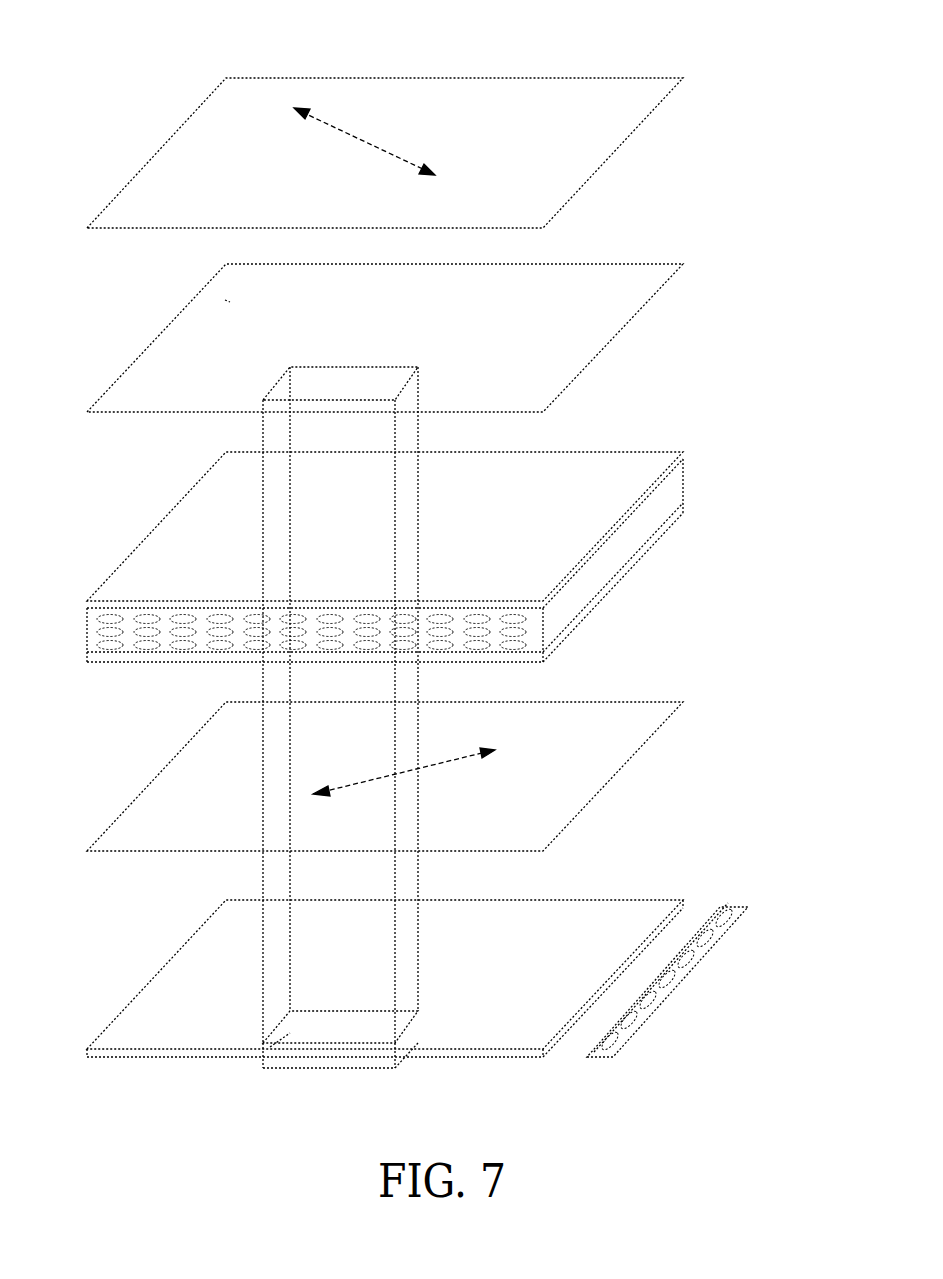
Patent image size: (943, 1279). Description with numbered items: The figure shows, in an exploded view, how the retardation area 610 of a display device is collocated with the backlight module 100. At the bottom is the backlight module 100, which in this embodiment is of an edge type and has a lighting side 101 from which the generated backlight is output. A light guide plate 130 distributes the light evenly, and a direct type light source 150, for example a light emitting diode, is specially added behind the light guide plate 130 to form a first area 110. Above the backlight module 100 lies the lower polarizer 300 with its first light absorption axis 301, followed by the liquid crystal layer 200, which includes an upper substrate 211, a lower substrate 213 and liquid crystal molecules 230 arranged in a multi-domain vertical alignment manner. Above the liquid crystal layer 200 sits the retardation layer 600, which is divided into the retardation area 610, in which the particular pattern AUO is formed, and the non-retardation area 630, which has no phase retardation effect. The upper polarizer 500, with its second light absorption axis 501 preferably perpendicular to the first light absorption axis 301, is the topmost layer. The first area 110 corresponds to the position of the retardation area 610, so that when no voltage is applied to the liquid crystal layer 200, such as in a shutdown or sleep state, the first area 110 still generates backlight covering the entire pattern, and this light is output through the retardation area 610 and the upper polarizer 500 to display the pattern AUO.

The backlight module 100 is at (443, 1007).
The lighting side 101 is at (175, 997).
The first area 110 is at (285, 1060).
The light guide plate 130 is at (514, 1057).
The direct type light source 150 is at (352, 1062).
The liquid crystal layer 200 is at (454, 538).
The upper substrate 211 is at (686, 453).
The lower substrate 213 is at (422, 581).
The liquid crystal molecules 230 is at (676, 490).
The lower polarizer 300 is at (706, 685).
The first light absorption axis 301 is at (432, 760).
The upper polarizer 500 is at (706, 53).
The second light absorption axis 501 is at (369, 146).
The retardation layer 600 is at (706, 255).
The retardation area 610 is at (292, 378).
The non-retardation area 630 is at (226, 312).